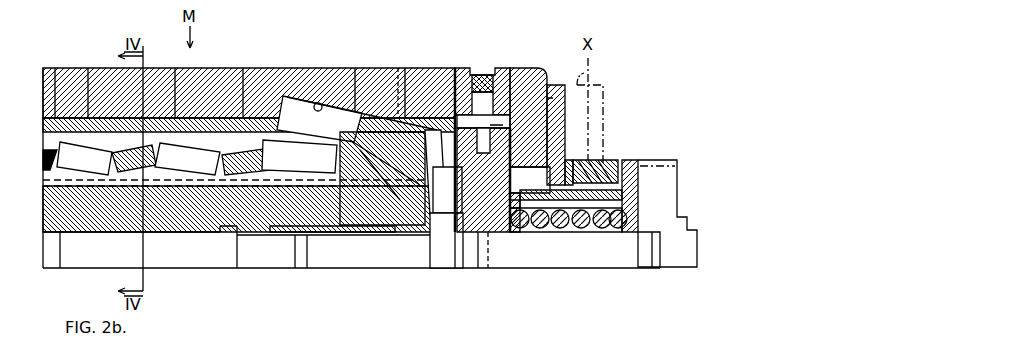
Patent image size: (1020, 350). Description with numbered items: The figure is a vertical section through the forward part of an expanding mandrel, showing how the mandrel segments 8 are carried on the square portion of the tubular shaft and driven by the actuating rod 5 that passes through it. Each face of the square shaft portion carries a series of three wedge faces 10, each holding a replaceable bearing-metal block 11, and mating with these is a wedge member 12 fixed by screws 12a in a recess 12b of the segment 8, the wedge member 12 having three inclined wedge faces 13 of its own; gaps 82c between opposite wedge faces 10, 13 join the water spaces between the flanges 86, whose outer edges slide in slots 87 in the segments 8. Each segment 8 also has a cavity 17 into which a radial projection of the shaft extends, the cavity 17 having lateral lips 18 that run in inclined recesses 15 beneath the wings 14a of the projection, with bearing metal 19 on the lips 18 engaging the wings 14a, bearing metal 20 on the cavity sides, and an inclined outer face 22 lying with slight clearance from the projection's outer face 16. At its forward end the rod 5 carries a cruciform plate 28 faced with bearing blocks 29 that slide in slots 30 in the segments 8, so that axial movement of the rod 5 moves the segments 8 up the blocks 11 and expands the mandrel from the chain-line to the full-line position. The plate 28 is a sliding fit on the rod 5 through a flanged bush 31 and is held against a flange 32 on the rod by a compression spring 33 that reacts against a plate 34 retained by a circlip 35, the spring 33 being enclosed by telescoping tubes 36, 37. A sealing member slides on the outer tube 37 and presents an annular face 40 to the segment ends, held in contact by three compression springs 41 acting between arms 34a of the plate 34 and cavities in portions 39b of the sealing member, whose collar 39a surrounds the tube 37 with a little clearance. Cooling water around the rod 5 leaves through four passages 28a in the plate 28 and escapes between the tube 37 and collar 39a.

The actuating rod 5 is at (185, 255).
The mandrel segments 8 is at (457, 67).
The wedge faces 10 is at (82, 232).
The replaceable block of bearing metal 11 is at (61, 232).
The wedge member 12 is at (56, 67).
The screws 12a is at (221, 54).
The recess 12b is at (254, 67).
The wedge faces 13 is at (171, 118).
The wings 14a is at (255, 182).
The recesses 15 is at (332, 168).
The outer faces 16 is at (364, 118).
The cavity 17 is at (289, 128).
The lateral lips 18 is at (408, 232).
The bearing metal 19 is at (437, 220).
The bearing metal 20 is at (429, 128).
The outer face 22 is at (319, 103).
The cruciform plate 28 is at (510, 232).
The passages 28a is at (488, 268).
The bearing blocks 29 is at (600, 107).
The slots 30 is at (500, 67).
The flanged bush 31 is at (474, 233).
The flange or abutment 32 is at (443, 243).
The compression spring 33 is at (606, 232).
The plate or abutment 34 is at (645, 212).
The arms 34a is at (677, 172).
The circlip 35 is at (650, 237).
The telescoping tube 36 is at (578, 232).
The telescoping tube 37 is at (570, 165).
The collar 39a is at (628, 186).
The portions of the sealing member 39b is at (592, 162).
The annular face 40 is at (556, 85).
The compression springs 41 is at (630, 163).
The gaps 82c is at (455, 240).
The flanges 86 is at (93, 67).
The slots 87 is at (398, 67).